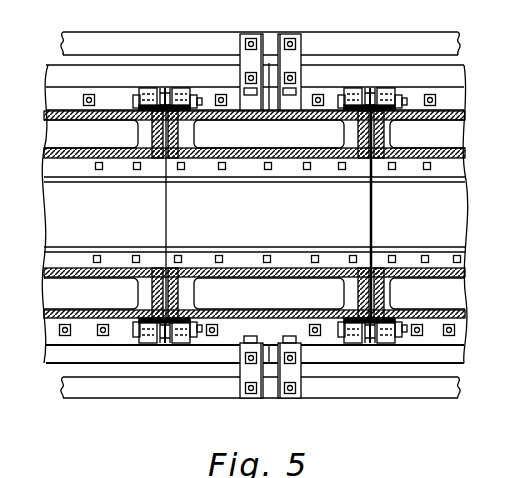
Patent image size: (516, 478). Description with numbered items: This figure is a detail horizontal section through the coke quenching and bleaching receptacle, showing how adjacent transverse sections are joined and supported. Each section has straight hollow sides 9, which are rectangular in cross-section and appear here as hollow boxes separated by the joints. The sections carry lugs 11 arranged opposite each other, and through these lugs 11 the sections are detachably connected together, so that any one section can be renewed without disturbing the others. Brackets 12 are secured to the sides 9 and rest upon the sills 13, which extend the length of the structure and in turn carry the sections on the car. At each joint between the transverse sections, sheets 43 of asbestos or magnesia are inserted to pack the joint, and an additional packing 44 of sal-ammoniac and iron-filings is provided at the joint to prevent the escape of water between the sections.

The hollow sides 9 is at (254, 216).
The lugs 11 is at (184, 88).
The brackets 12 is at (268, 52).
The sills 13 is at (55, 78).
The sheets of asbestos or magnesia 43 is at (166, 214).
The additional packing 44 is at (160, 270).